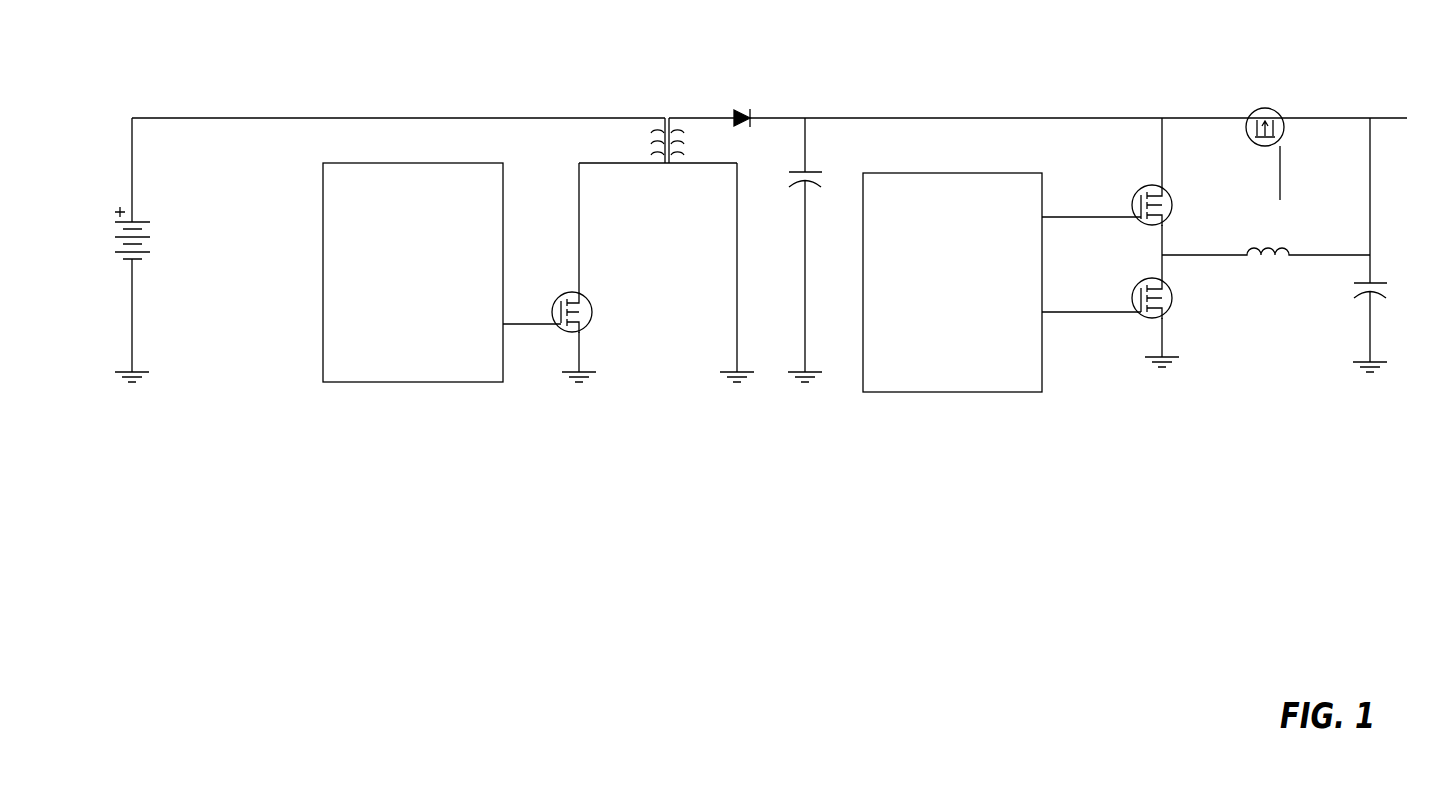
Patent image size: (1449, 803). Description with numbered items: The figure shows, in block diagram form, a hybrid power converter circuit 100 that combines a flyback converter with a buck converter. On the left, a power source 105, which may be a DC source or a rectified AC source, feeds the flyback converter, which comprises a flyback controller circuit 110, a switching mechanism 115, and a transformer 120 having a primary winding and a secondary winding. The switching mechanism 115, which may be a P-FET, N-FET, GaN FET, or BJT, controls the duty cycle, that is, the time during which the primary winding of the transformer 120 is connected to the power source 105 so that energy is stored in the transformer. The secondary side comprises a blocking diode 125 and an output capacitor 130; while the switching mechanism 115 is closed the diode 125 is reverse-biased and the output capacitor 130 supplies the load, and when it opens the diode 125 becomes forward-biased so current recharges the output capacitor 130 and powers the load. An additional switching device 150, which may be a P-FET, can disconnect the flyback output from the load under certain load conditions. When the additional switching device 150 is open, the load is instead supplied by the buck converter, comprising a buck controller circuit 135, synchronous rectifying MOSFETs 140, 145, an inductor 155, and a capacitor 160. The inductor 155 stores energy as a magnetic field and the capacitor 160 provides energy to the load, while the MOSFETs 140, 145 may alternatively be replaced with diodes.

The hybrid power converter circuit 100 is at (316, 64).
The power source 105 is at (152, 188).
The flyback controller circuit 110 is at (390, 163).
The switching mechanism 115 is at (599, 332).
The transformer 120 is at (666, 108).
The blocking diode 125 is at (743, 98).
The output capacitor 130 is at (824, 160).
The buck controller circuit 135 is at (983, 173).
The synchronous rectifying MOSFET 140 is at (1174, 221).
The synchronous rectifying MOSFET 145 is at (1182, 314).
The switch S1 150 is at (1247, 98).
The inductor 155 is at (1291, 240).
The capacitor 160 is at (1384, 314).